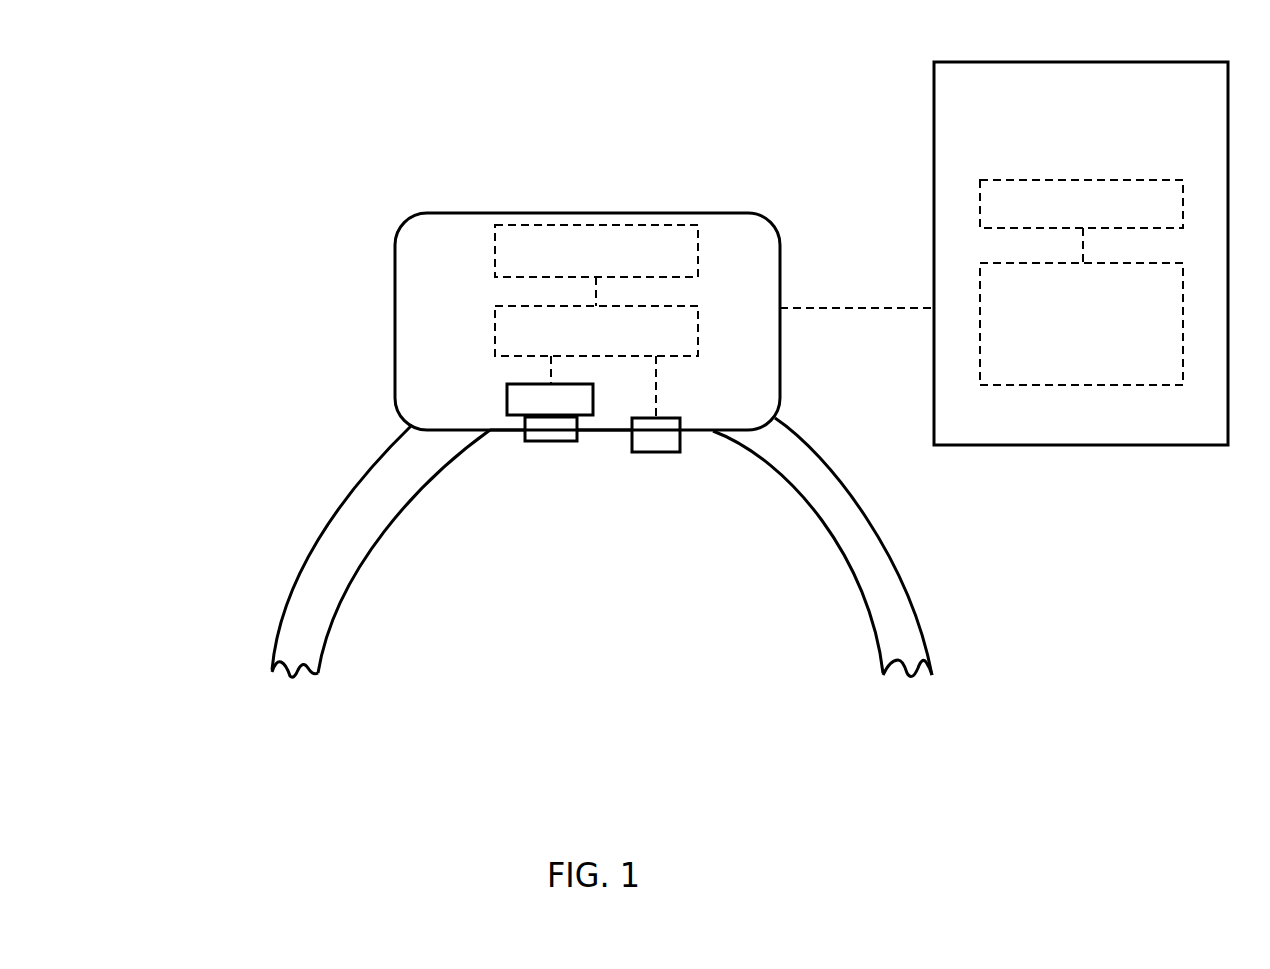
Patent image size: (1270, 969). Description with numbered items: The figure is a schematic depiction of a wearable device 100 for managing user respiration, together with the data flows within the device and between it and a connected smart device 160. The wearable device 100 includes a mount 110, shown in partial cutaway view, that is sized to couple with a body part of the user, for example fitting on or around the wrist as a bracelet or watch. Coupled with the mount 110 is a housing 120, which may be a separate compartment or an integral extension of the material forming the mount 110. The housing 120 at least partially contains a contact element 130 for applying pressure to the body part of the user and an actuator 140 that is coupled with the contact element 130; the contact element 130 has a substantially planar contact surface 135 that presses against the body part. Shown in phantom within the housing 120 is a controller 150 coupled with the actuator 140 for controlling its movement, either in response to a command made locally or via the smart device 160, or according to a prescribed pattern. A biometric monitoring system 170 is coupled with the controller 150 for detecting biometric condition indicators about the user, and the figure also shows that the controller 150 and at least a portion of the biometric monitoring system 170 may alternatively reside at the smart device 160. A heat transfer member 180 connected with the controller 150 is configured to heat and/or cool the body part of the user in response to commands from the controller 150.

The wearable device 100 is at (205, 455).
The mount 110 is at (280, 613).
The housing 120 is at (343, 276).
The contact element 130 is at (510, 442).
The contact surface 135 is at (553, 455).
The actuator 140 is at (518, 402).
The controller 150 is at (682, 346).
The smart device 160 is at (1105, 137).
The biometric monitoring system 170 is at (652, 266).
The heat transfer member 180 is at (671, 470).